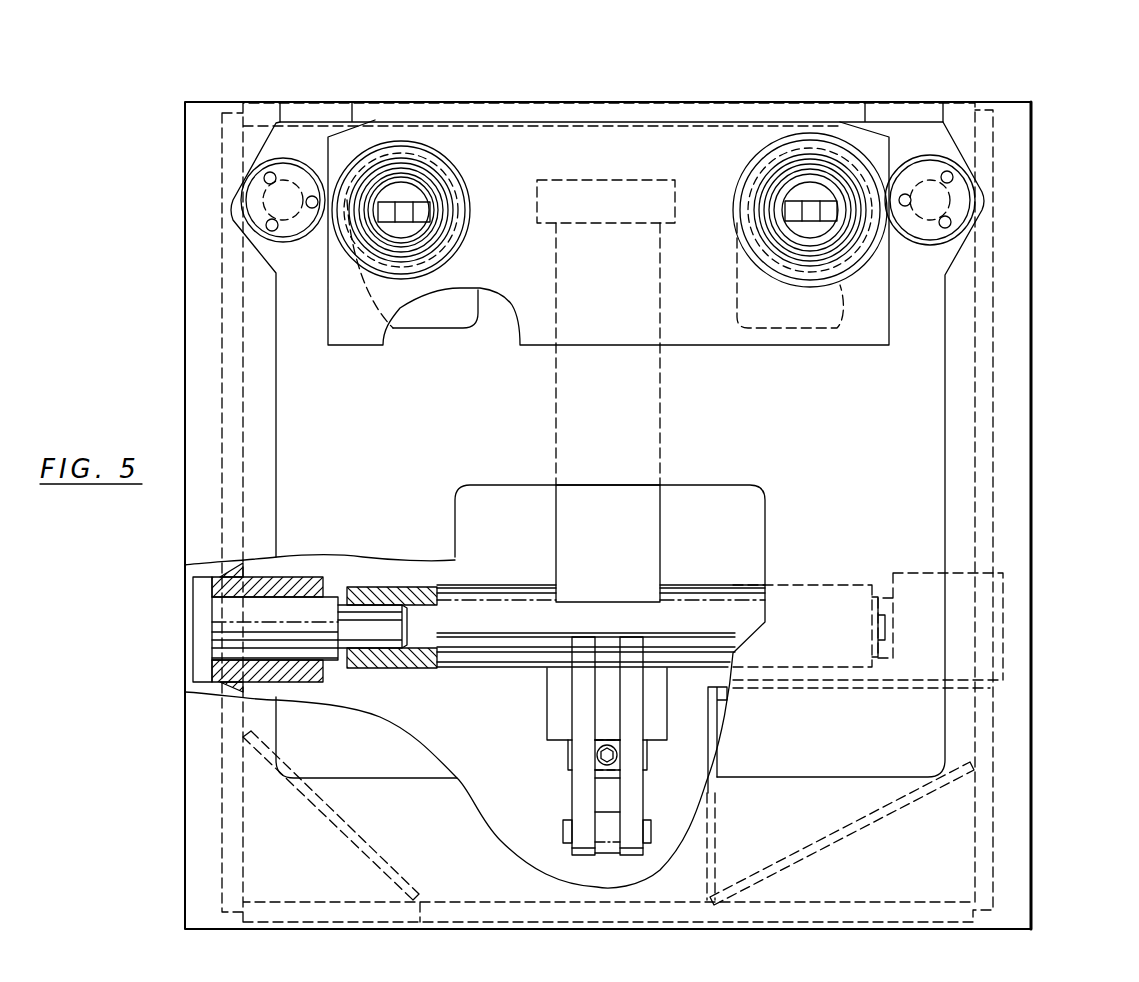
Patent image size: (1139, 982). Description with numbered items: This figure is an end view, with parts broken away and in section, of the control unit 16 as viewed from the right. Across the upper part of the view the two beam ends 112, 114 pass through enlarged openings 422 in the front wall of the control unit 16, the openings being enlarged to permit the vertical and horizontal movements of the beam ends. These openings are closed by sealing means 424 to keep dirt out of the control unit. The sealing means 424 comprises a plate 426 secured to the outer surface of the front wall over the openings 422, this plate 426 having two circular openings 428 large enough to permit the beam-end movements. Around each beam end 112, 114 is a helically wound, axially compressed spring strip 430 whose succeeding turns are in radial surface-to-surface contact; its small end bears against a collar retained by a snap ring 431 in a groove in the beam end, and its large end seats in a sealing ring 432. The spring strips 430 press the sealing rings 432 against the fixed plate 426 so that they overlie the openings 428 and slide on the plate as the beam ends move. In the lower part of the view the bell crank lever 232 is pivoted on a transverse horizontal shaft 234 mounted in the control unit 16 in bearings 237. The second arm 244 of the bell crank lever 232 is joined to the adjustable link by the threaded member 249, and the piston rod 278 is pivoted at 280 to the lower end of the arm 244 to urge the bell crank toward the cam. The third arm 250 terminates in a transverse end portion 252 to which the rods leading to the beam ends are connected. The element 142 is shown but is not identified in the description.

The control unit 16 is at (1033, 335).
The beam end 112 is at (808, 190).
The beam end 114 is at (403, 167).
The drive hub 142 is at (290, 210).
The bell crank lever 232 is at (666, 462).
The transverse horizontal shaft 234 is at (505, 600).
The bearings 237 is at (367, 617).
The second arm 244 is at (583, 708).
The turnbuckle member 249 is at (608, 766).
The third arm 250 is at (650, 566).
The transverse end portion 252 is at (648, 195).
The piston rod 278 is at (605, 842).
The pivot 280 is at (565, 830).
The openings 422 is at (437, 318).
The sealing means 424 is at (466, 152).
The plate 426 is at (352, 332).
The circular openings 428 is at (455, 223).
The spring strip 430 is at (401, 190).
The snap ring 431 is at (433, 197).
The sealing ring 432 is at (440, 260).